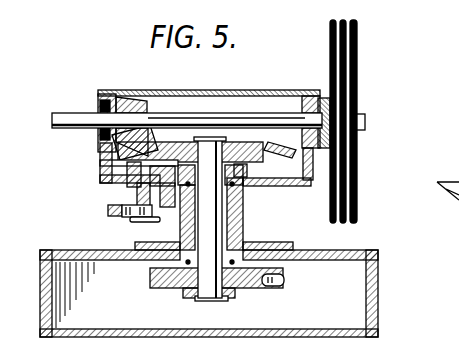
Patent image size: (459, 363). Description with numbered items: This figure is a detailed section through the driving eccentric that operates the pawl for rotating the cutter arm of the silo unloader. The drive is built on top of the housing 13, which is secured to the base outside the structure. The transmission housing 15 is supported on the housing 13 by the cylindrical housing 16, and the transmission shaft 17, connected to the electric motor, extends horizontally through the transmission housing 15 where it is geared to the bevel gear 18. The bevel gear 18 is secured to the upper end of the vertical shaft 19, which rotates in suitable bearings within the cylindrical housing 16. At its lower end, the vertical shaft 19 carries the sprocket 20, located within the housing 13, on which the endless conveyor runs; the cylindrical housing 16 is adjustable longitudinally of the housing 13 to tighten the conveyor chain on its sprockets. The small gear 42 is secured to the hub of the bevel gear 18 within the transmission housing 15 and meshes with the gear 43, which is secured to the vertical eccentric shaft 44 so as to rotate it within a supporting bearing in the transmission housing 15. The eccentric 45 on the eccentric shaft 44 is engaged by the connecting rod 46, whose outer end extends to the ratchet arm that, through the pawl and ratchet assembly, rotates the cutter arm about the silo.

The housing 13 is at (366, 248).
The transmission housing 15 is at (136, 83).
The cylindrical housing 16 is at (251, 208).
The transmission shaft 17 is at (264, 113).
The bevel gear 18 is at (104, 162).
The vertical shaft 19 is at (226, 224).
The sprocket 20 is at (282, 283).
The small gear 42 is at (256, 175).
The gear 43 is at (107, 180).
The eccentric shaft 44 is at (127, 193).
The eccentric 45 is at (128, 218).
The connecting rod 46 is at (110, 212).